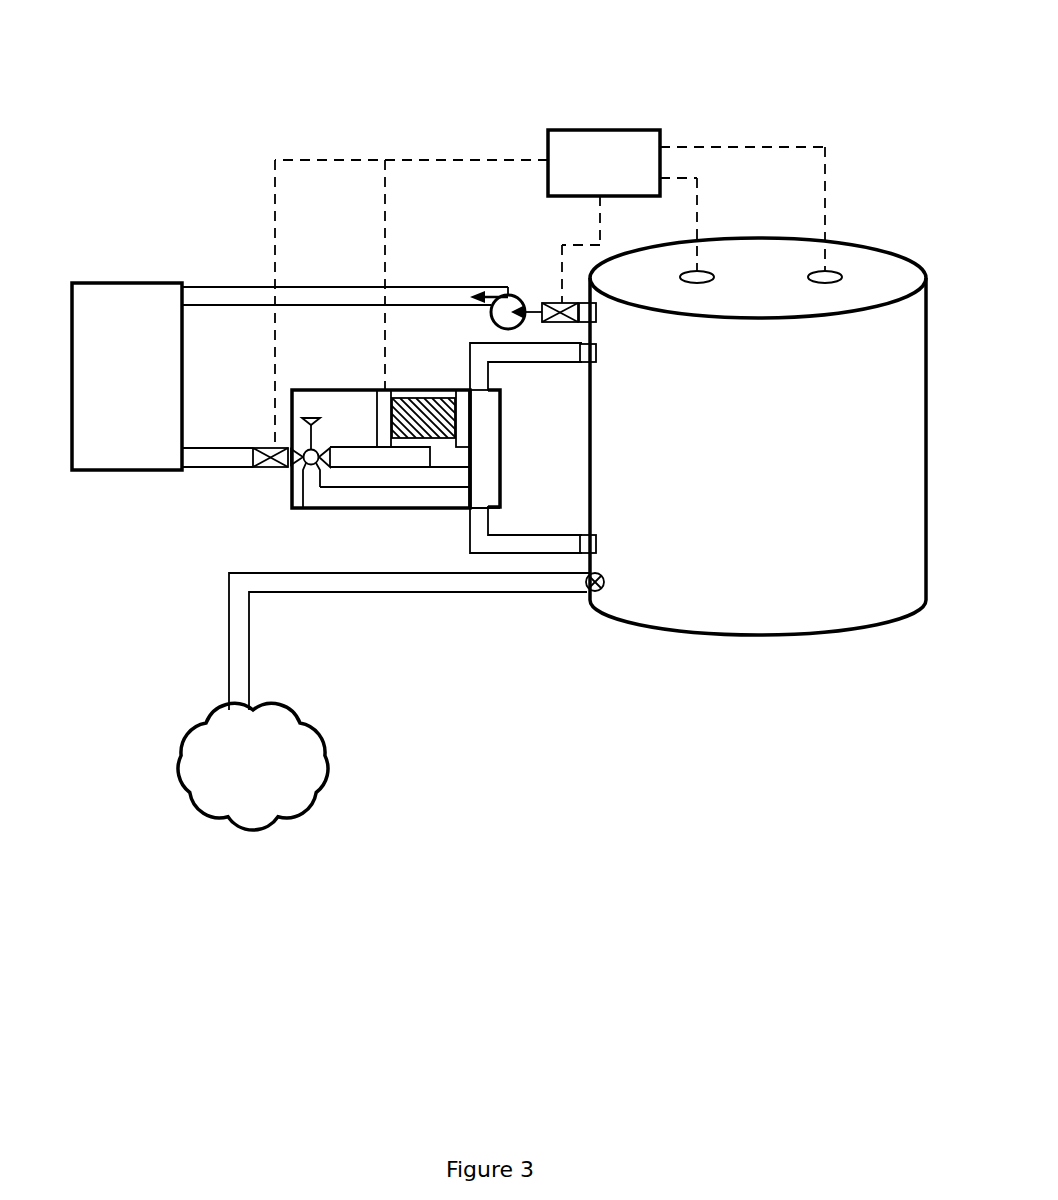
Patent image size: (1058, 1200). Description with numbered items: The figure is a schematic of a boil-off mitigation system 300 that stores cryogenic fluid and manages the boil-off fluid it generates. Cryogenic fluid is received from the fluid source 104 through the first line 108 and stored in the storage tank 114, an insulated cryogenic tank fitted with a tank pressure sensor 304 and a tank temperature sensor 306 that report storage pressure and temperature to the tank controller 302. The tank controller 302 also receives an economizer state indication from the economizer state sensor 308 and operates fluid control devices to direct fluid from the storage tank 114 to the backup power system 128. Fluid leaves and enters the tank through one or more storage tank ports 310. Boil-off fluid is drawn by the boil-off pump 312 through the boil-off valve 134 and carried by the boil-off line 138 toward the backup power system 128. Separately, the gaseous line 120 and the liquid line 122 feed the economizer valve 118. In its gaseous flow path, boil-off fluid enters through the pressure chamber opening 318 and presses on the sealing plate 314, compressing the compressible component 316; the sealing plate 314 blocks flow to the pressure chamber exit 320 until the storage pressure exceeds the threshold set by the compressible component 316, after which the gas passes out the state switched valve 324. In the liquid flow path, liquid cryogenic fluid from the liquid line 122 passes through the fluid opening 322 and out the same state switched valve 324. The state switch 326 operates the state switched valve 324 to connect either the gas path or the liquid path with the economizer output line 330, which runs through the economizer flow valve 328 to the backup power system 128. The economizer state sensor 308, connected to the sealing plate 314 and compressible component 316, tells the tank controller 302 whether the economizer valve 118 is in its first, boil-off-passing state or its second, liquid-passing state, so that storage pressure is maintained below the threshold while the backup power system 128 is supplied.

The boil-off mitigation system 300 is at (663, 58).
The tank controller 302 is at (550, 289).
The tank pressure sensor 304 is at (705, 270).
The tank temperature sensor 306 is at (830, 270).
The storage tank 114 is at (758, 436).
The backup power system 128 is at (127, 376).
The boil-off line 138 is at (287, 285).
The boil-off pump 312 is at (502, 294).
The boil-off valve 134 is at (557, 300).
The storage tank ports 310 is at (586, 328).
The gaseous line 120 is at (470, 350).
The economizer valve 118 is at (357, 438).
The economizer state sensor 308 is at (380, 417).
The compressible component 316 is at (412, 397).
The sealing plate 314 is at (465, 387).
The pressure chamber opening 318 is at (450, 435).
The pressure chamber exit 320 is at (418, 447).
The fluid opening 322 is at (480, 508).
The state switched valve 324 is at (303, 465).
The state switch 326 is at (300, 420).
The economizer flow valve 328 is at (250, 458).
The economizer output line 330 is at (198, 455).
The liquid line 122 is at (563, 545).
The first line 108 is at (287, 592).
The fluid source 104 is at (253, 766).